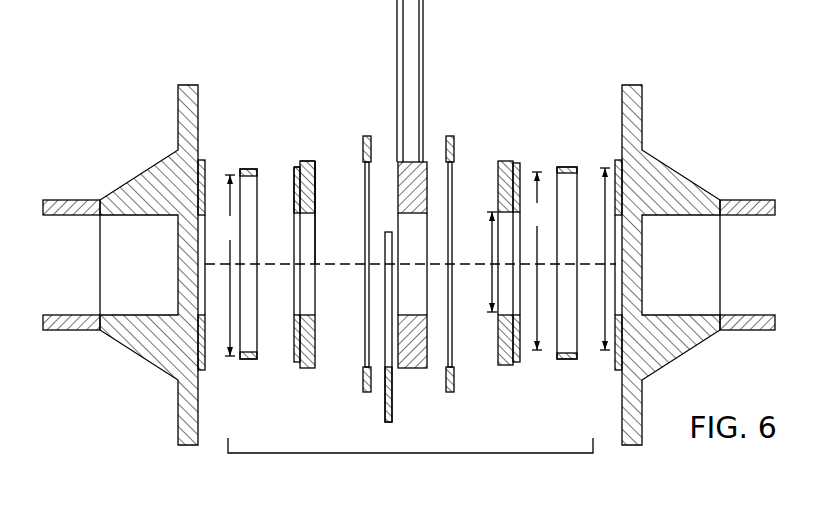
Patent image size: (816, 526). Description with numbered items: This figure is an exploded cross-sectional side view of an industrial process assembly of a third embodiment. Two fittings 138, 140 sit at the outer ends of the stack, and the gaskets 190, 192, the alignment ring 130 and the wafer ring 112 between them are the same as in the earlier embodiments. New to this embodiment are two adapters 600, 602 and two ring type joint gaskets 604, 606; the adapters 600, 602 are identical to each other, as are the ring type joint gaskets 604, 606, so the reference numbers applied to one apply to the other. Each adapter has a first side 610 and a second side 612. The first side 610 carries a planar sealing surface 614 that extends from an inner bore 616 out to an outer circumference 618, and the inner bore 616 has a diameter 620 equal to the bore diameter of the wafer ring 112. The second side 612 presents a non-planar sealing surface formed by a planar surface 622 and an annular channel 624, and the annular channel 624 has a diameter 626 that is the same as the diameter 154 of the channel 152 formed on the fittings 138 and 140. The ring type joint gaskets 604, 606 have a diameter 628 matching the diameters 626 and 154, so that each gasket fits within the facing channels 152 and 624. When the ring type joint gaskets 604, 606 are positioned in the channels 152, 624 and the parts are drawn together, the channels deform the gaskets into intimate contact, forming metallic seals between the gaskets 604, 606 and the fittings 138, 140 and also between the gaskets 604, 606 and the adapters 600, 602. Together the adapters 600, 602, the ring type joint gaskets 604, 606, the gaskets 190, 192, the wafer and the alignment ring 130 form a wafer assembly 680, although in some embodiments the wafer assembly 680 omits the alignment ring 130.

The wafer ring 112 is at (411, 369).
The alignment ring 130 is at (391, 408).
The fitting 138 is at (188, 446).
The fitting 140 is at (636, 446).
The channel 152 is at (616, 164).
The diameter 154 is at (594, 259).
The gasket 190 is at (369, 393).
The gasket 192 is at (451, 393).
The adapter 600 is at (303, 253).
The adapter 602 is at (506, 366).
The ring type joint gasket 604 is at (248, 361).
The ring type joint gasket 606 is at (566, 360).
The first side 610 is at (329, 169).
The second side 612 is at (281, 169).
The planar sealing surface 614 is at (318, 195).
The inner bore 616 is at (318, 237).
The outer circumference 618 is at (308, 162).
The diameter 620 is at (479, 262).
The planar surface 622 is at (298, 192).
The annular channel 624 is at (296, 166).
The diameter 626 is at (537, 261).
The diameter 628 is at (221, 265).
The wafer assembly 680 is at (345, 454).